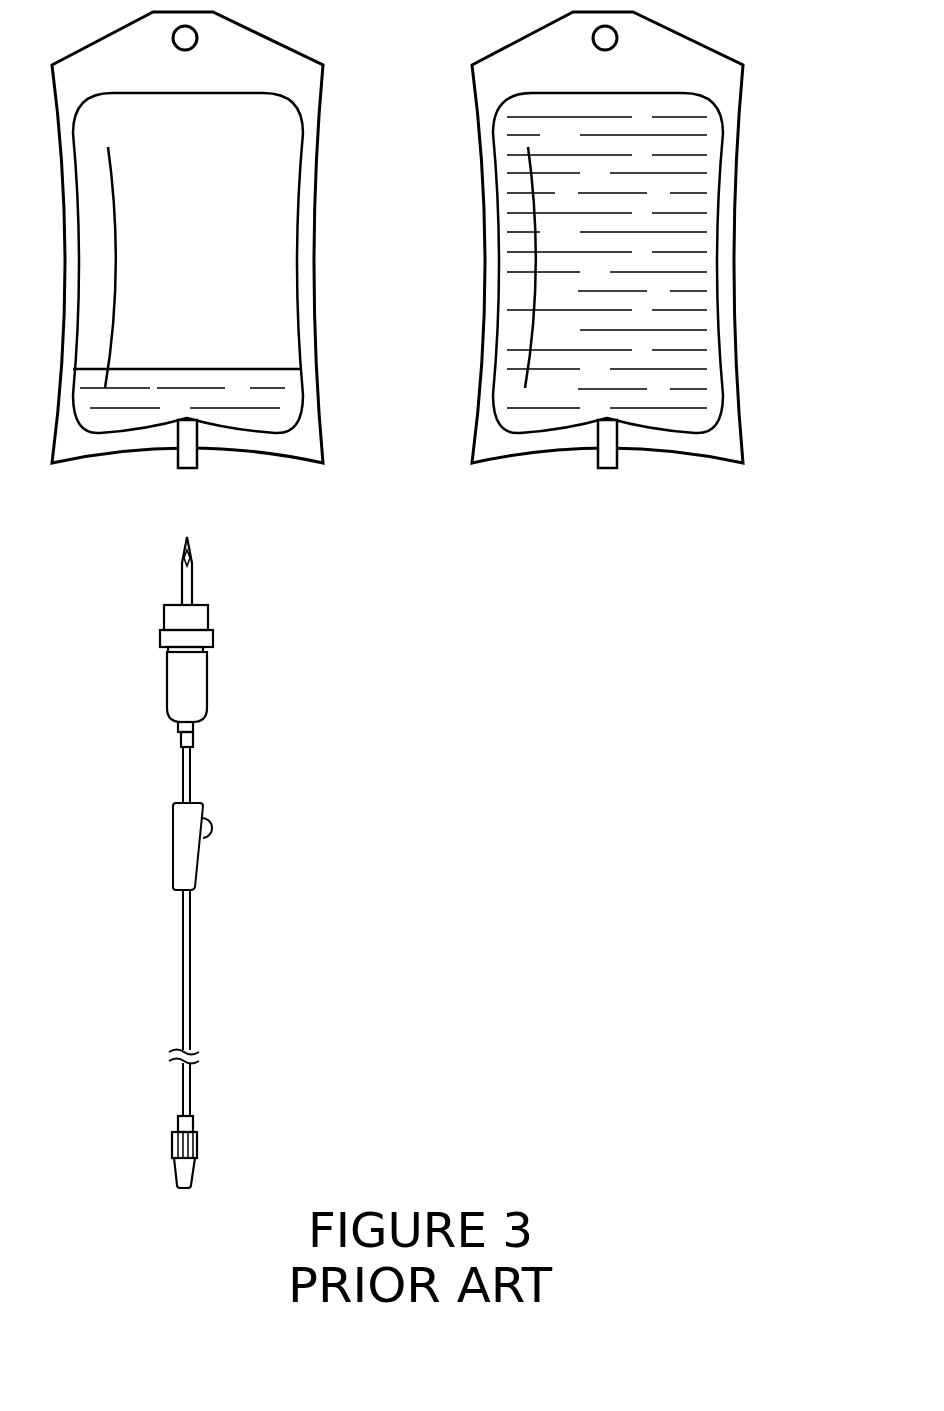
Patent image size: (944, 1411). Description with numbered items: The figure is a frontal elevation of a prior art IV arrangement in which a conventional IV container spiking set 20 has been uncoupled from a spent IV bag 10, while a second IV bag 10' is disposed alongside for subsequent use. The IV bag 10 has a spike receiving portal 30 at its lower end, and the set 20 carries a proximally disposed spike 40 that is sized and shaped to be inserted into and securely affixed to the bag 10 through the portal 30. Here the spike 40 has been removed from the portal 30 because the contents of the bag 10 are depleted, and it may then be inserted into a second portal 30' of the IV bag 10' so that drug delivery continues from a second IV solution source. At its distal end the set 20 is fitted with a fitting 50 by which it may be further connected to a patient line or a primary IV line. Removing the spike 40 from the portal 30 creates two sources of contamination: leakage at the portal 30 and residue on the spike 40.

The IV bag 10 is at (252, 237).
The second IV bag 10' is at (677, 237).
The IV container spiking set 20 is at (214, 691).
The spike receiving portal 30 is at (237, 477).
The second portal 30' is at (661, 480).
The spike 40 is at (193, 568).
The fitting 50 is at (206, 1144).